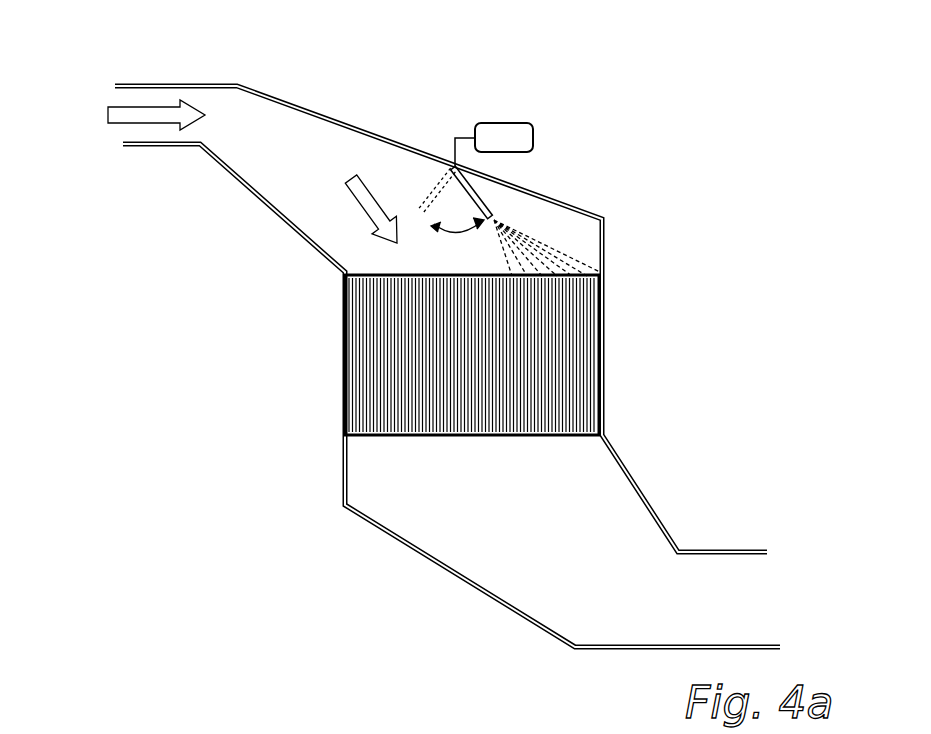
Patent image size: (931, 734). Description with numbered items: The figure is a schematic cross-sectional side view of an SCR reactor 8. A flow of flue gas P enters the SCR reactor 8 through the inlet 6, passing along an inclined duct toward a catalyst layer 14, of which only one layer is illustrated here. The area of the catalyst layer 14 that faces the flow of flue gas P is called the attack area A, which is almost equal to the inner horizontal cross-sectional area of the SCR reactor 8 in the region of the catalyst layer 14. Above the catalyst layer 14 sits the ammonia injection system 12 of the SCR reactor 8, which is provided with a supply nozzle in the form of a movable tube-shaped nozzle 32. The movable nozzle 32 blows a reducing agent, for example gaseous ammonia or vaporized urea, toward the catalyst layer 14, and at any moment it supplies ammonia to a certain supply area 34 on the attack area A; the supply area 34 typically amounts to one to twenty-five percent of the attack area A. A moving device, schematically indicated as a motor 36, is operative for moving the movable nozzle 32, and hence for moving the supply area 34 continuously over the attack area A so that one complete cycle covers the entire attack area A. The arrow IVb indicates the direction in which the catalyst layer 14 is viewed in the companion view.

The inlet 6 is at (235, 176).
The SCR reactor 8 is at (616, 350).
The catalyst layer 14 is at (576, 406).
The ammonia injection system 12 is at (495, 100).
The motor 36 is at (518, 123).
The movable nozzle 32 is at (483, 194).
The supply area 34 is at (550, 272).
The flow of flue gas P is at (146, 117).
The attack area A is at (348, 272).
The arrow IVb is at (405, 184).